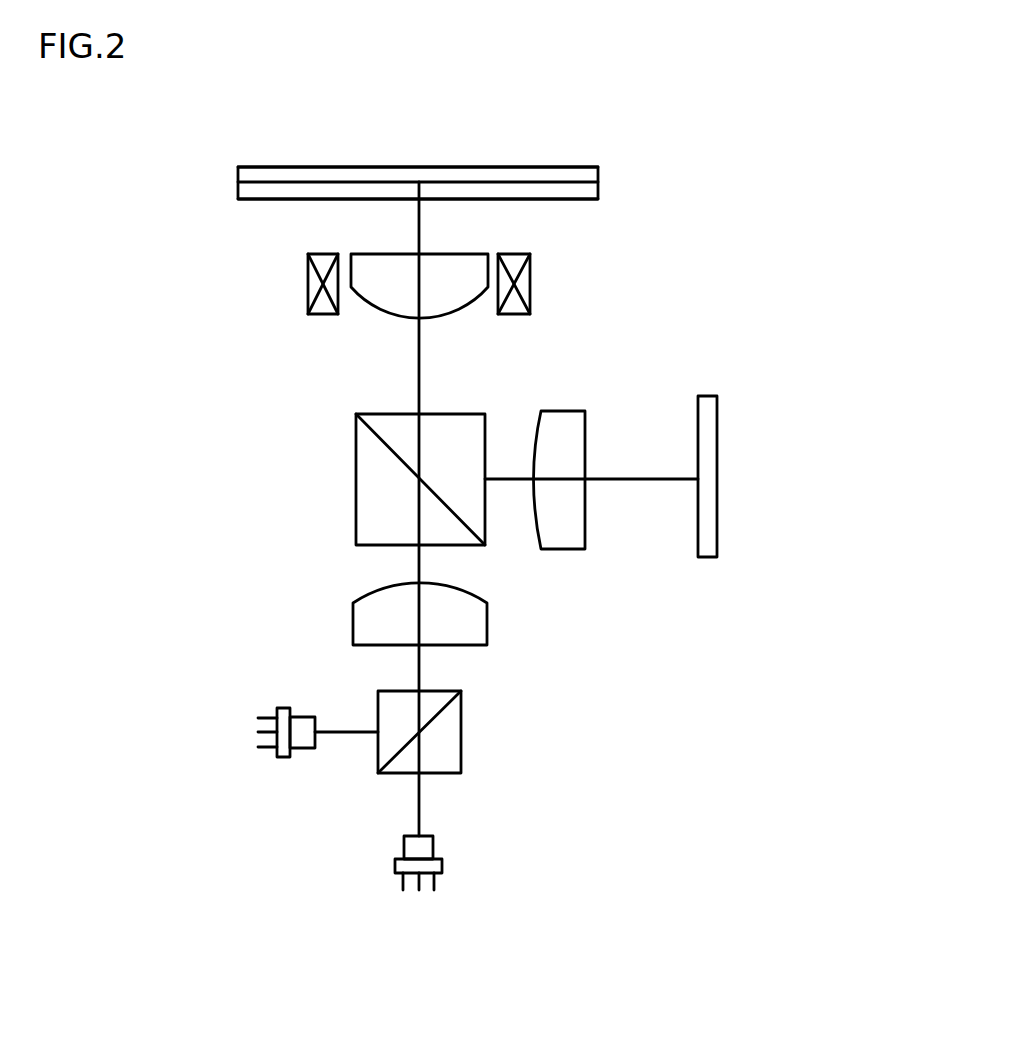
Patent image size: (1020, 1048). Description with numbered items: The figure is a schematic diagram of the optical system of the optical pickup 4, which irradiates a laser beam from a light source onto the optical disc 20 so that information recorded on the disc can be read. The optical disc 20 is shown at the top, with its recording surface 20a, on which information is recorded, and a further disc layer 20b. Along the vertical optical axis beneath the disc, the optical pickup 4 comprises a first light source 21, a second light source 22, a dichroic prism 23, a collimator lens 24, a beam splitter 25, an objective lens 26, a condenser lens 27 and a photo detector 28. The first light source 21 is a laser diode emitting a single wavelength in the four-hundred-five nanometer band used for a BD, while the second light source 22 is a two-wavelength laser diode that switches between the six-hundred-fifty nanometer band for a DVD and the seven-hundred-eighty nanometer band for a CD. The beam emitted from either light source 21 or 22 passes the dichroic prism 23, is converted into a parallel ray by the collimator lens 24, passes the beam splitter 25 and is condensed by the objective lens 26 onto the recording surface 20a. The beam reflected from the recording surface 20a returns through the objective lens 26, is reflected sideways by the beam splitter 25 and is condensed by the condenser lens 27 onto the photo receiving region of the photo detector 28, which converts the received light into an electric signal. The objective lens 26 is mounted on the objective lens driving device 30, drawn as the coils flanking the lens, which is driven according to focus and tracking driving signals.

The optical pickup 4 is at (812, 190).
The optical disc 20 is at (238, 167).
The recording surface 20a is at (497, 184).
The substrate 20b is at (280, 193).
The first light source 21 is at (404, 857).
The second light source 22 is at (280, 707).
The dichroic prism 23 is at (461, 742).
The collimator lens 24 is at (487, 623).
The beam splitter 25 is at (356, 475).
The objective lens 26 is at (395, 312).
The condenser lens 27 is at (565, 549).
The photo detector 28 is at (717, 458).
The objective lens driving device 30 is at (308, 280).